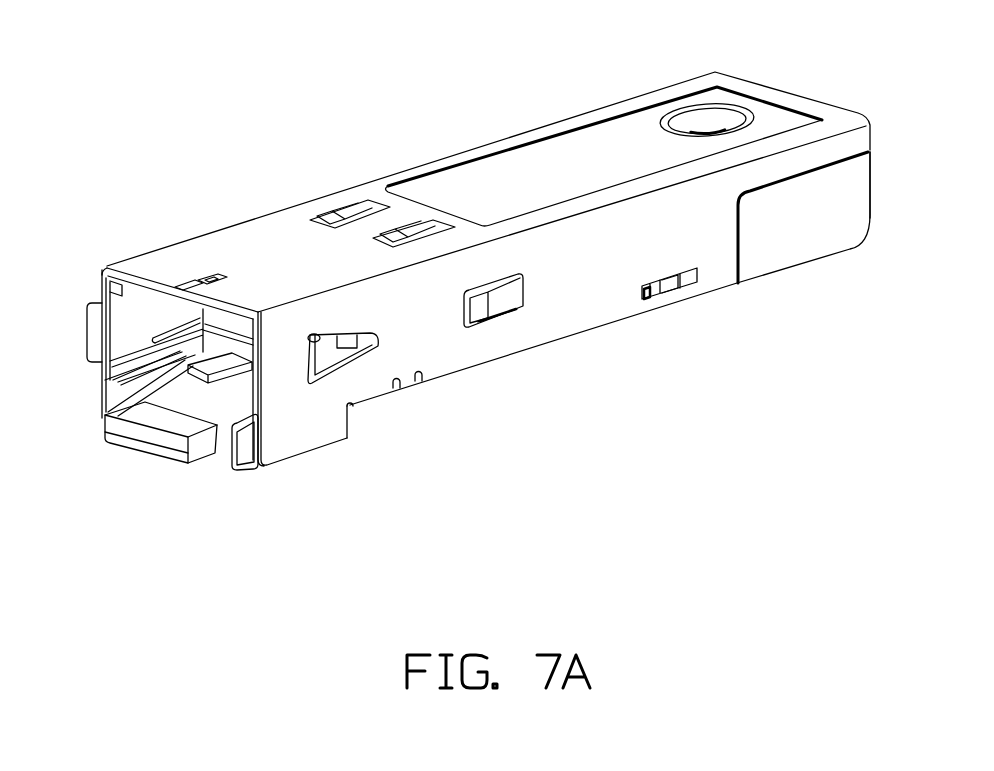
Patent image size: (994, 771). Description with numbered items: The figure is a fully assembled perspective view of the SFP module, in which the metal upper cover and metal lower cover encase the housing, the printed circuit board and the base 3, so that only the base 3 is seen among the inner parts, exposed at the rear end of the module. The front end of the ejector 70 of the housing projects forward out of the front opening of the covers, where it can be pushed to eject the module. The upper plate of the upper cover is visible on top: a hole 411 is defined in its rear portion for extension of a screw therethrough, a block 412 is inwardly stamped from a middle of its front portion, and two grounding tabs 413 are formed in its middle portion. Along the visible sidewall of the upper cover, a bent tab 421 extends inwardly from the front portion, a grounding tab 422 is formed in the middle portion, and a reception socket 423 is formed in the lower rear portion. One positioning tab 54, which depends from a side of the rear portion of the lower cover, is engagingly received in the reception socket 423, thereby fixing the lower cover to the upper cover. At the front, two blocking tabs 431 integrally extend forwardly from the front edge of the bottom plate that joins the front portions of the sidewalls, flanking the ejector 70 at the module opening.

The base 3 is at (773, 236).
The hole 411 is at (702, 117).
The block 412 is at (210, 276).
The grounding tabs 413 is at (400, 230).
The bent tab 421 is at (320, 346).
The grounding tab 422 is at (495, 303).
The reception socket 423 is at (647, 293).
The blocking tabs 431 is at (120, 398).
The positioning tab 54 is at (668, 282).
The ejector 70 is at (140, 433).